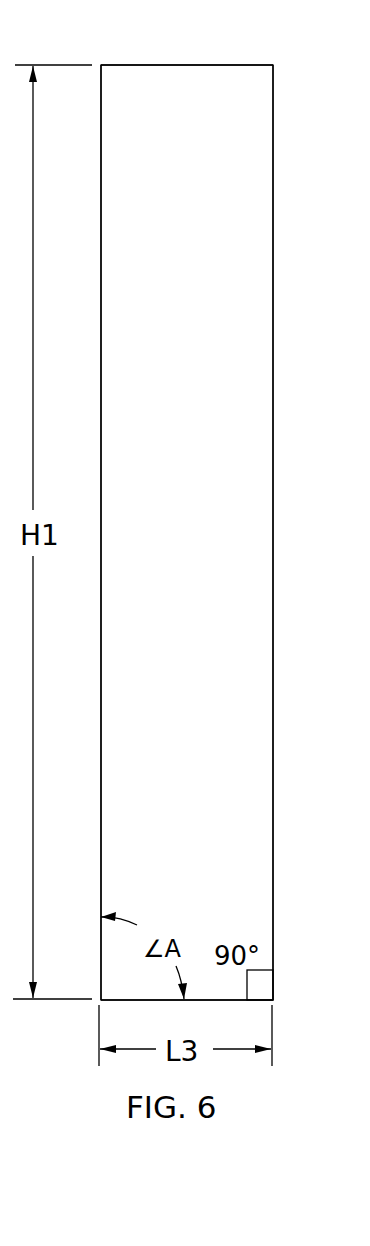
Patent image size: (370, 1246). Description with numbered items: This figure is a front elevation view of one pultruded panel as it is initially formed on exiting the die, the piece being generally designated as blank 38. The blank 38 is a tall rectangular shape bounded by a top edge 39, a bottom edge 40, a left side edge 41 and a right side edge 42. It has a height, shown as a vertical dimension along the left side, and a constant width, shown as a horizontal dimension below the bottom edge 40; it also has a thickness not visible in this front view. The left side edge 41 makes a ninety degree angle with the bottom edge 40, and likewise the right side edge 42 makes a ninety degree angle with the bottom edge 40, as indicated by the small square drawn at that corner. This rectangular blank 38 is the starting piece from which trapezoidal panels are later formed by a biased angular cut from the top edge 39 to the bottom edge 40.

The blank 38 is at (275, 462).
The top edge 39 is at (193, 65).
The bottom edge 40 is at (225, 1001).
The left side edge 41 is at (100, 426).
The right side edge 42 is at (273, 691).